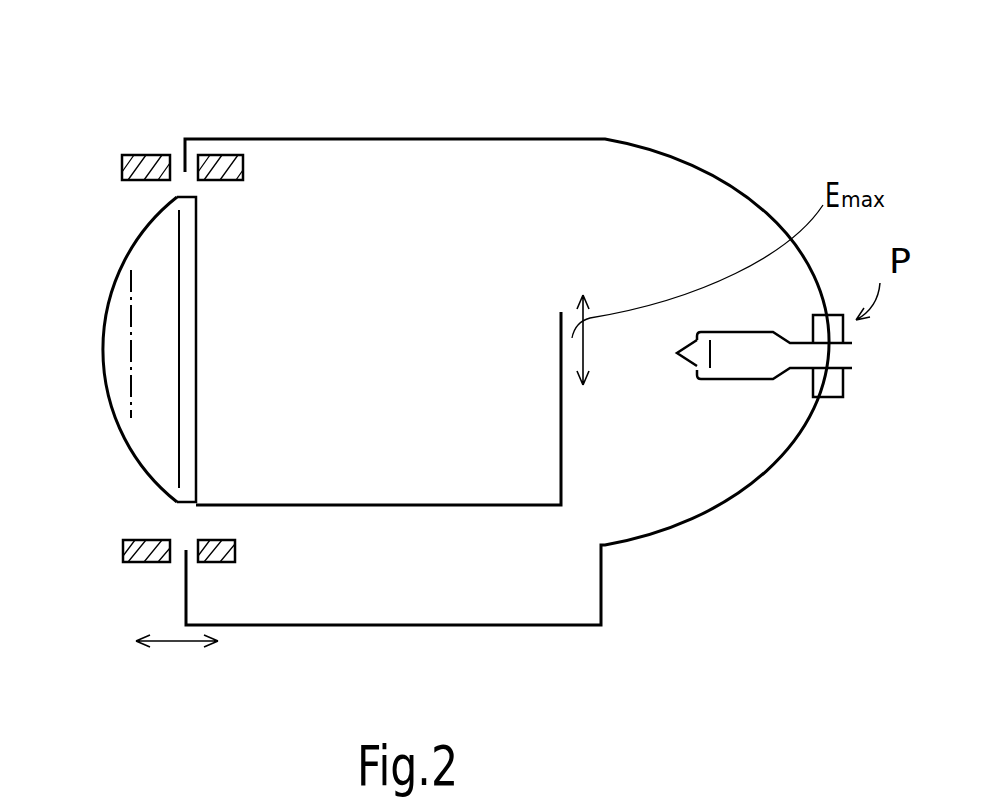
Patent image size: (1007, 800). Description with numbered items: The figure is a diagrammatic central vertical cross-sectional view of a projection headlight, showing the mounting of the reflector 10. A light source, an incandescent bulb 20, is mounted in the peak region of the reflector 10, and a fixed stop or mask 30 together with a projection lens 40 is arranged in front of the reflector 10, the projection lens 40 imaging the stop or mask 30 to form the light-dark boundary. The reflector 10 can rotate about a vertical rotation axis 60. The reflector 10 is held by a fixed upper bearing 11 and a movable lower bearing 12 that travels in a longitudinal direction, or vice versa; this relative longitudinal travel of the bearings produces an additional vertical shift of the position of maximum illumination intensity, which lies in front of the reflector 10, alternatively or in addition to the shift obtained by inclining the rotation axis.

The reflector 10 is at (715, 182).
The fixed upper bearing 11 is at (223, 165).
The movable lower bearing 12 is at (225, 563).
The incandescent bulb 20 is at (742, 368).
The stop or mask 30 is at (567, 458).
The projection lens 40 is at (160, 273).
The vertical rotation axis 60 is at (131, 346).